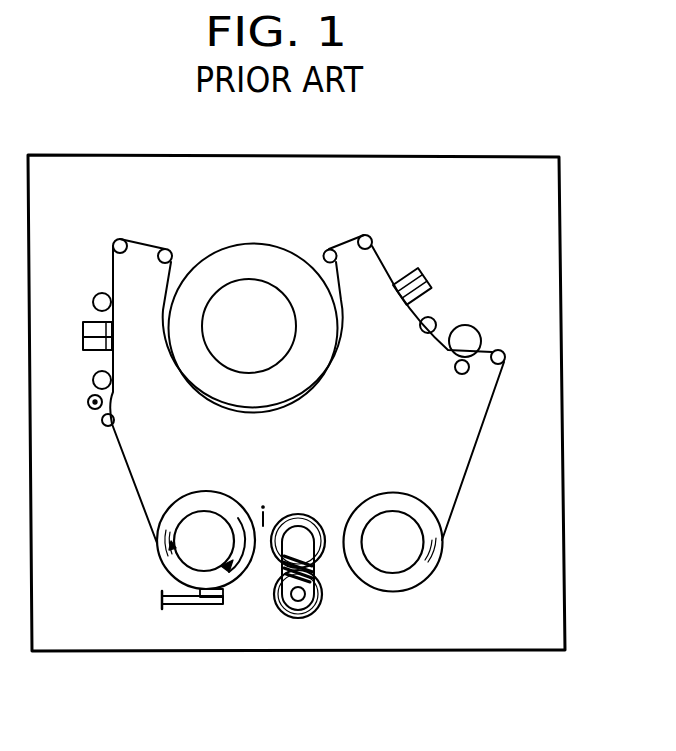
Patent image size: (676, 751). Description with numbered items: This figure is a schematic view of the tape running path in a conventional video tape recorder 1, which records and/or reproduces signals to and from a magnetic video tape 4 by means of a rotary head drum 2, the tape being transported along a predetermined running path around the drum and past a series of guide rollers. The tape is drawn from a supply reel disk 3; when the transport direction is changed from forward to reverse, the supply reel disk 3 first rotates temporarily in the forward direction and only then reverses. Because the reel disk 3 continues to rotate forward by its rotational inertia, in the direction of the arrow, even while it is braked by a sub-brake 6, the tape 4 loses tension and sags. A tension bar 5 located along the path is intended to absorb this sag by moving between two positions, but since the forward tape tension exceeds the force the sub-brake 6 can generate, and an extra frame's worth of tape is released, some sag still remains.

The housing frame 1 is at (565, 539).
The rotary head drum 2 is at (250, 256).
The supply reel disk 3 is at (213, 523).
The magnetic video tape 4 is at (133, 478).
The tension bar 5 is at (103, 401).
The sub-brake 6 is at (212, 607).